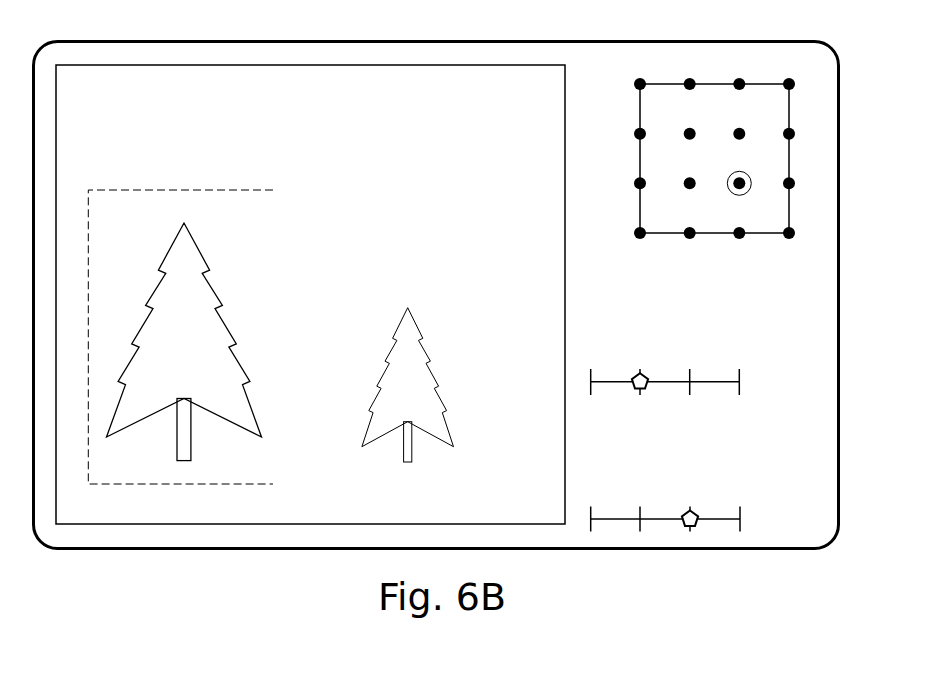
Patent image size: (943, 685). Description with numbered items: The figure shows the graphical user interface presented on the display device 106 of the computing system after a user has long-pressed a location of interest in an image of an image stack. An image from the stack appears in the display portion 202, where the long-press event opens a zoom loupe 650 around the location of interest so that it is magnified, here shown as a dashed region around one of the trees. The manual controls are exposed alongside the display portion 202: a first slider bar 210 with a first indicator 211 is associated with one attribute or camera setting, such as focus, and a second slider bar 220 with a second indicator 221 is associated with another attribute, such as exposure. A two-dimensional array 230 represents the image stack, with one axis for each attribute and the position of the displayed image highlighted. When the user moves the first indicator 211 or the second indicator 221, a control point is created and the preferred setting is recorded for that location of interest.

The display device 106 is at (652, 39).
The display portion 202 is at (451, 114).
The zoom loupe 650 is at (273, 245).
The two-dimensional array 230 is at (652, 246).
The first slider bar 210 is at (753, 382).
The first indicator 211 is at (642, 397).
The second slider bar 220 is at (752, 518).
The second indicator 221 is at (680, 530).